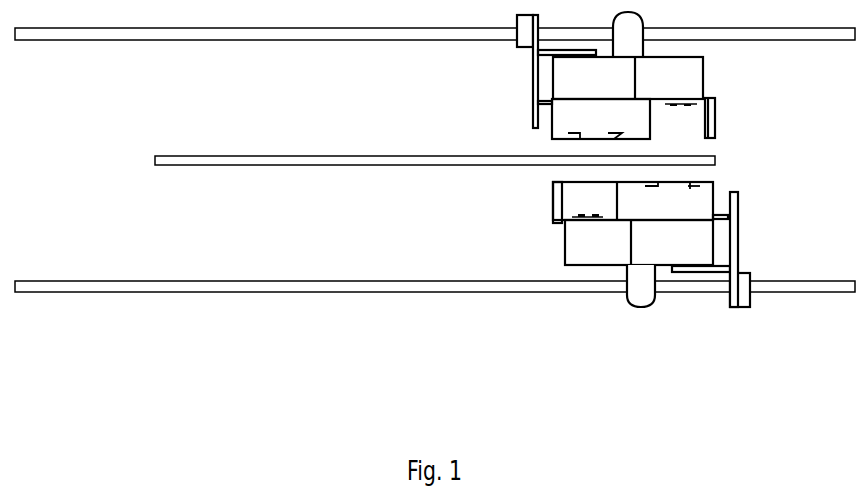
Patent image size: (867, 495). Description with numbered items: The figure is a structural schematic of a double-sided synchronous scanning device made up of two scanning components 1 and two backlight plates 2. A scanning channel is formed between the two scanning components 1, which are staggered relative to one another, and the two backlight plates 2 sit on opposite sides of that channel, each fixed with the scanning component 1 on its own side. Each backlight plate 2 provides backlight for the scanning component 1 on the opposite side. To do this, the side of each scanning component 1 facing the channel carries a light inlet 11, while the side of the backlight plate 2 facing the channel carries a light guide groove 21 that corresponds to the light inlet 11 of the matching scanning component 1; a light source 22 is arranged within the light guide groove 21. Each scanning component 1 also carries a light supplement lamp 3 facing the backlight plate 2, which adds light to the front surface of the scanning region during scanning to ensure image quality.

The scanning component 1 is at (695, 245).
The light inlet 11 is at (673, 185).
The light supplement lamp 3 is at (688, 183).
The backlight plate 2 is at (561, 296).
The light guide groove 21 is at (570, 198).
The light source 22 is at (582, 220).